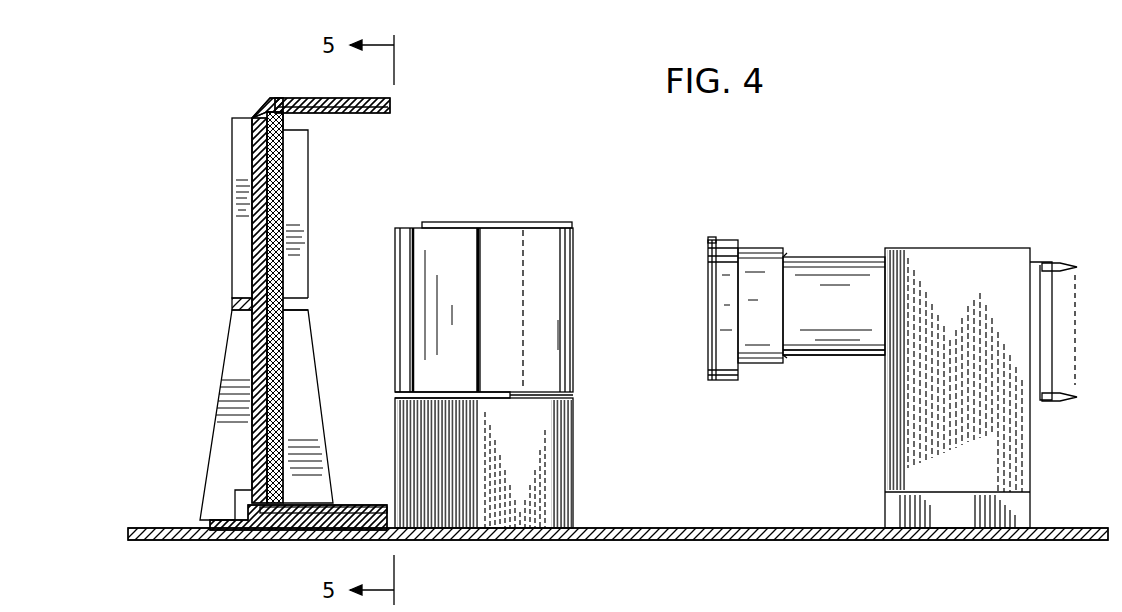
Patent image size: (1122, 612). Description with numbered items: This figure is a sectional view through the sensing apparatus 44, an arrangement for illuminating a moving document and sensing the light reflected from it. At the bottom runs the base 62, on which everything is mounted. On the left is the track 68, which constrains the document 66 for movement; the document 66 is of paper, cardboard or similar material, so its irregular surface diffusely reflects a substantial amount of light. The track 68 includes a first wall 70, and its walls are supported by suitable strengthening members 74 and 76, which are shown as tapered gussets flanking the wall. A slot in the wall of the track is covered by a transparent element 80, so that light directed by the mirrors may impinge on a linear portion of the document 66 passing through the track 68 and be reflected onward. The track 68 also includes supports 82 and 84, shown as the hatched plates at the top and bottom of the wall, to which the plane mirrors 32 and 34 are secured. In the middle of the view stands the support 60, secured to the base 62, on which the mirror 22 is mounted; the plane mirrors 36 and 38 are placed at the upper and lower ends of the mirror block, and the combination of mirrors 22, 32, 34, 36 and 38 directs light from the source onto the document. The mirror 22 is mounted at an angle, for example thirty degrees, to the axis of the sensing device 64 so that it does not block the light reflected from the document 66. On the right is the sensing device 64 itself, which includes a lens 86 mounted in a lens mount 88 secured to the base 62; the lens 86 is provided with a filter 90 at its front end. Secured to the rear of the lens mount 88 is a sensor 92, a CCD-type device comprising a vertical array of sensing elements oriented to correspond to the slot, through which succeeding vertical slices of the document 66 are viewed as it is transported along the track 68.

The mirror 22 is at (529, 353).
The plane mirror 32 is at (350, 112).
The plane mirror 34 is at (345, 505).
The plane mirror 36 is at (511, 228).
The plane mirror 38 is at (540, 388).
The sensing apparatus 44 is at (882, 341).
The support 60 is at (575, 470).
The base 62 is at (625, 538).
The sensing device 64 is at (850, 368).
The document 66 is at (268, 165).
The track 68 is at (306, 321).
The first wall 70 is at (260, 115).
The strengthening member 74 is at (218, 450).
The strengthening member 76 is at (318, 410).
The transparent element 80 is at (285, 205).
The support 82 is at (390, 103).
The support 84 is at (322, 530).
The lens 86 is at (820, 257).
The lens mount 88 is at (950, 265).
The filter 90 is at (712, 248).
The sensor 92 is at (1052, 405).